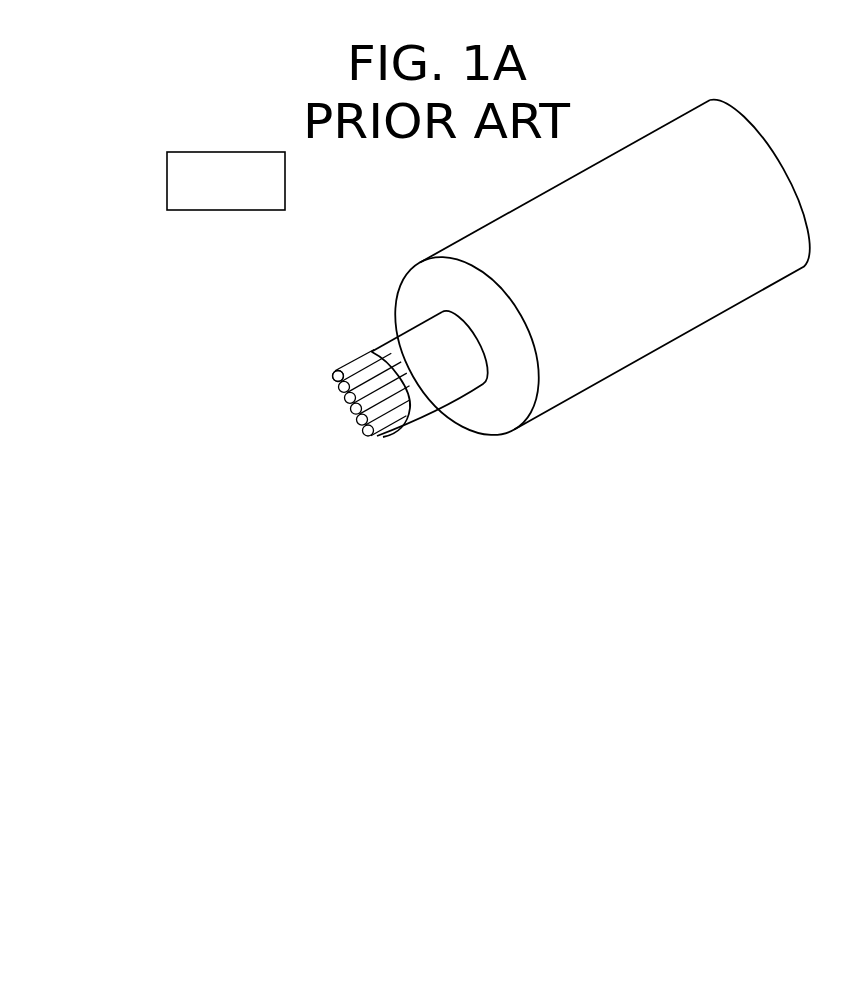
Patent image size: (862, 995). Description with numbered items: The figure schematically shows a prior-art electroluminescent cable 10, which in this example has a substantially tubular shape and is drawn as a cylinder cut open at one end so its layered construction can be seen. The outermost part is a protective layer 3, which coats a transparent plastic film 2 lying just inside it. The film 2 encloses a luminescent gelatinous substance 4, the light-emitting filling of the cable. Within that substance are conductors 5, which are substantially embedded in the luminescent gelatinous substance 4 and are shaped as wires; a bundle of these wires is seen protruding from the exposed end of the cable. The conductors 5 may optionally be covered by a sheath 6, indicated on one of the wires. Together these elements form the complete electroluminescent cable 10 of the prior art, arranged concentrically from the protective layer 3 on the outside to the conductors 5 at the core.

The electroluminescent cable 10 is at (365, 343).
The protective layer 3 is at (635, 318).
The transparent plastic film 2 is at (416, 375).
The luminescent gelatinous substance 4 is at (333, 384).
The conductors 5 is at (352, 408).
The sheath 6 is at (373, 424).